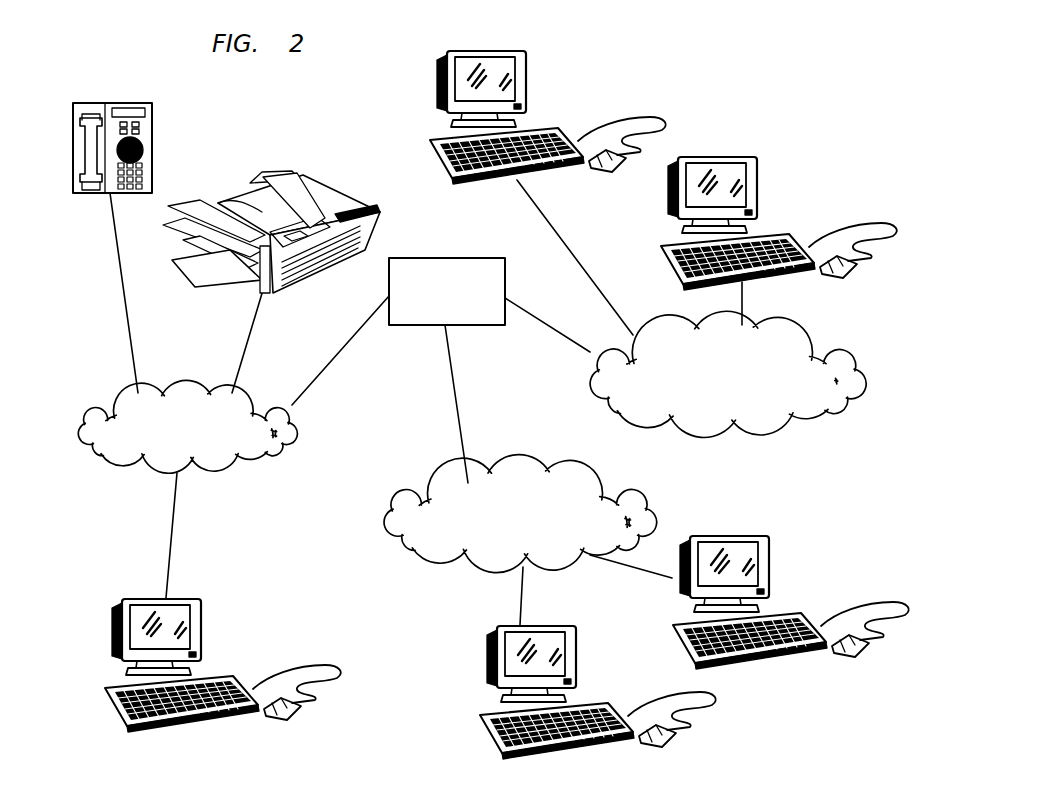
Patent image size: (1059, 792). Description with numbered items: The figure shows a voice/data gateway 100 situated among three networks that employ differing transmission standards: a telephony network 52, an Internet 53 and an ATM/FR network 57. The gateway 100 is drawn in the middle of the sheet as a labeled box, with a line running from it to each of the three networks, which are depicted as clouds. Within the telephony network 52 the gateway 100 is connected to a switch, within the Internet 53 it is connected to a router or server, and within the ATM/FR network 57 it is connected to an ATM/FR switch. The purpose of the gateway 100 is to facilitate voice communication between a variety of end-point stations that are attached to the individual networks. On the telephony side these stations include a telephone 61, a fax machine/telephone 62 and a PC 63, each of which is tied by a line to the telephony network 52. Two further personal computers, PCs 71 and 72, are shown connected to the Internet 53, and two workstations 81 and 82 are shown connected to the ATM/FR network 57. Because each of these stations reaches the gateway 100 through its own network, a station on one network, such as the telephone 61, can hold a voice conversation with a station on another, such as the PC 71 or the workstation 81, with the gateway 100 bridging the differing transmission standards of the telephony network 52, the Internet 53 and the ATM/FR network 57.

The telephony network 52 is at (142, 473).
The Internet 53 is at (785, 422).
The ATM/FR network 57 is at (455, 566).
The telephone 61 is at (130, 103).
The fax machine/telephone 62 is at (317, 179).
The PC 63 is at (202, 621).
The PC 71 is at (527, 86).
The PC 72 is at (758, 181).
The workstation 81 is at (738, 536).
The workstation 82 is at (548, 626).
The gateway 100 is at (470, 258).